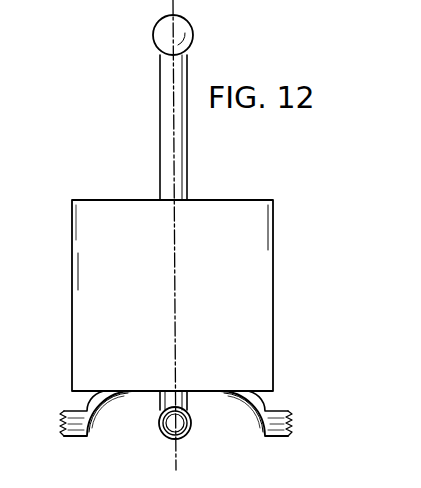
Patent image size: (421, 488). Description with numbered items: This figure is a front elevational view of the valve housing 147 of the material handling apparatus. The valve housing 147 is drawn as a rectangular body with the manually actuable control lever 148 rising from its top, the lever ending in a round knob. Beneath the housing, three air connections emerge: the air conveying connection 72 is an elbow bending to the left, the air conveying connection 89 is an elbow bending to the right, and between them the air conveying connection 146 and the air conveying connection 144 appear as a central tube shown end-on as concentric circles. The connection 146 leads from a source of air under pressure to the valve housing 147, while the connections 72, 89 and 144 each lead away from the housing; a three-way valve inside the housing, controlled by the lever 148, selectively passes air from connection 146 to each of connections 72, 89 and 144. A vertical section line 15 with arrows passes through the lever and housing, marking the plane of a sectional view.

The section line 15 is at (194, 7).
The manually actuable control lever 148 is at (186, 37).
The valve housing 147 is at (263, 250).
The air conveying connection 146 is at (159, 412).
The air conveying connection 144 is at (193, 410).
The air conveying connection 72 is at (95, 432).
The air conveying connection 89 is at (280, 413).